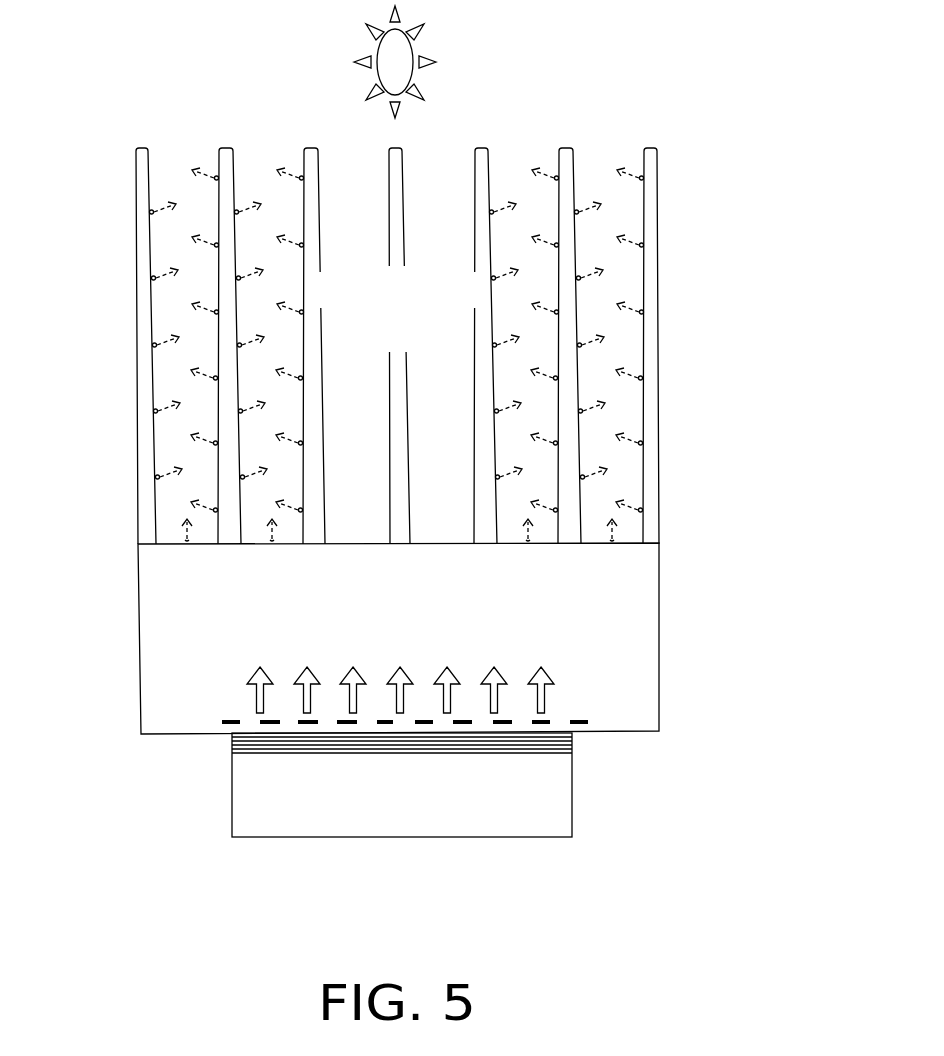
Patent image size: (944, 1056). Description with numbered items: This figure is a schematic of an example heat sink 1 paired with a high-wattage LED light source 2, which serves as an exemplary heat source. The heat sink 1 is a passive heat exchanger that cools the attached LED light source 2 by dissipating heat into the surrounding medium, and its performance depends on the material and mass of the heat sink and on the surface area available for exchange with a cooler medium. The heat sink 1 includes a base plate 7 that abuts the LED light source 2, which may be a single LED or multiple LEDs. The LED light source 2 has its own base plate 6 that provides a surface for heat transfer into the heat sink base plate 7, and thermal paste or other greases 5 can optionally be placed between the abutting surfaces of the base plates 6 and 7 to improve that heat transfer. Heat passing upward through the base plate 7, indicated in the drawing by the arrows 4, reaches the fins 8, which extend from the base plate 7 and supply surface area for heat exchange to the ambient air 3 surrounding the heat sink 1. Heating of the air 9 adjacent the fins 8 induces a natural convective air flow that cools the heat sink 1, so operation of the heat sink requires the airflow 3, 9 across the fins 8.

The heat sink 1 is at (112, 150).
The LED light source 2 is at (290, 802).
The ambient air 3 is at (395, 62).
The heat flow arrows 4 is at (550, 692).
The thermal paste or other greases 5 is at (230, 723).
The base plate 6 is at (570, 750).
The base plate 7 is at (613, 593).
The fins 8 is at (568, 319).
The air 9 is at (597, 172).